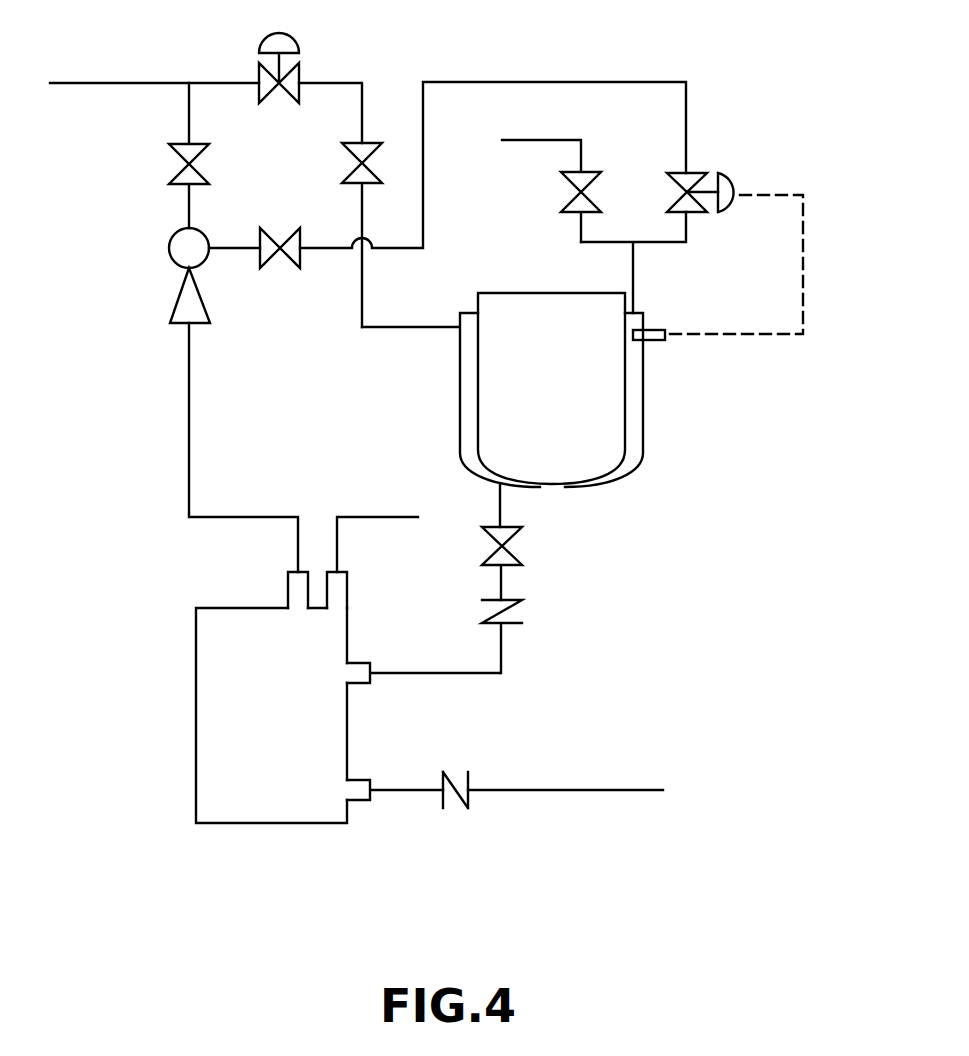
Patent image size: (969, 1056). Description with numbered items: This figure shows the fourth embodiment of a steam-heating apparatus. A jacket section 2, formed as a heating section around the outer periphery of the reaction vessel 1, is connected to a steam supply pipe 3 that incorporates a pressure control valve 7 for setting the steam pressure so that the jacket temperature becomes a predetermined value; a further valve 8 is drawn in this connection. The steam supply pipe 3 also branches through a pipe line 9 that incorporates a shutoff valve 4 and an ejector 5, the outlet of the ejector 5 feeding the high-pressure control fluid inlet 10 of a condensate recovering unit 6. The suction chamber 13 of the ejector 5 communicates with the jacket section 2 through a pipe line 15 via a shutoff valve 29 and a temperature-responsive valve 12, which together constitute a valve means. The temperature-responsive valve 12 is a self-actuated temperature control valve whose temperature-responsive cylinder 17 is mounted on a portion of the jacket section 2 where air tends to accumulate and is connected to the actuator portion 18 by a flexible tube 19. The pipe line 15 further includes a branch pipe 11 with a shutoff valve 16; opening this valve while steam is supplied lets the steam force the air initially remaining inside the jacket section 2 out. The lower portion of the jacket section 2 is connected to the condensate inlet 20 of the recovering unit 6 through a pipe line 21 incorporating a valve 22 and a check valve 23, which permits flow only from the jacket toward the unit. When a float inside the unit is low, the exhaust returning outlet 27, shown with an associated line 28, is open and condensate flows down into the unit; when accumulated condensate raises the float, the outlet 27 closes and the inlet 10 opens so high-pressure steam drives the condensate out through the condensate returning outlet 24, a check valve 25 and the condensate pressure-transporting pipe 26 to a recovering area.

The reaction vessel 1 is at (497, 302).
The jacket section 2 is at (467, 402).
The steam supply pipe 3 is at (103, 82).
The shutoff valve 4 is at (182, 142).
The ejector 5 is at (128, 306).
The condensate recovering unit 6 is at (161, 716).
The pressure control valve 7 is at (257, 75).
The valve 8 is at (343, 150).
The pipe line 9 is at (190, 423).
The high-pressure control fluid inlet 10 is at (295, 588).
The branch pipe 11 is at (578, 234).
The temperature-responsive valve 12 is at (690, 175).
The suction chamber 13 is at (168, 237).
The pipe line 15 is at (550, 82).
The shutoff valve 16 is at (582, 167).
The temperature-responsive cylinder 17 is at (653, 342).
The actuator portion 18 is at (740, 183).
The flexible tube 19 is at (803, 252).
The condensate inlet 20 is at (357, 678).
The pipe line 21 is at (502, 517).
The valve 22 is at (508, 567).
The check valve 23 is at (510, 625).
The condensate returning outlet 24 is at (360, 797).
The check valve 25 is at (470, 802).
The condensate pressure-transporting pipe 26 is at (563, 787).
The exhaust returning outlet 27 is at (340, 588).
The line 28 is at (375, 513).
The shutoff valve 29 is at (287, 267).